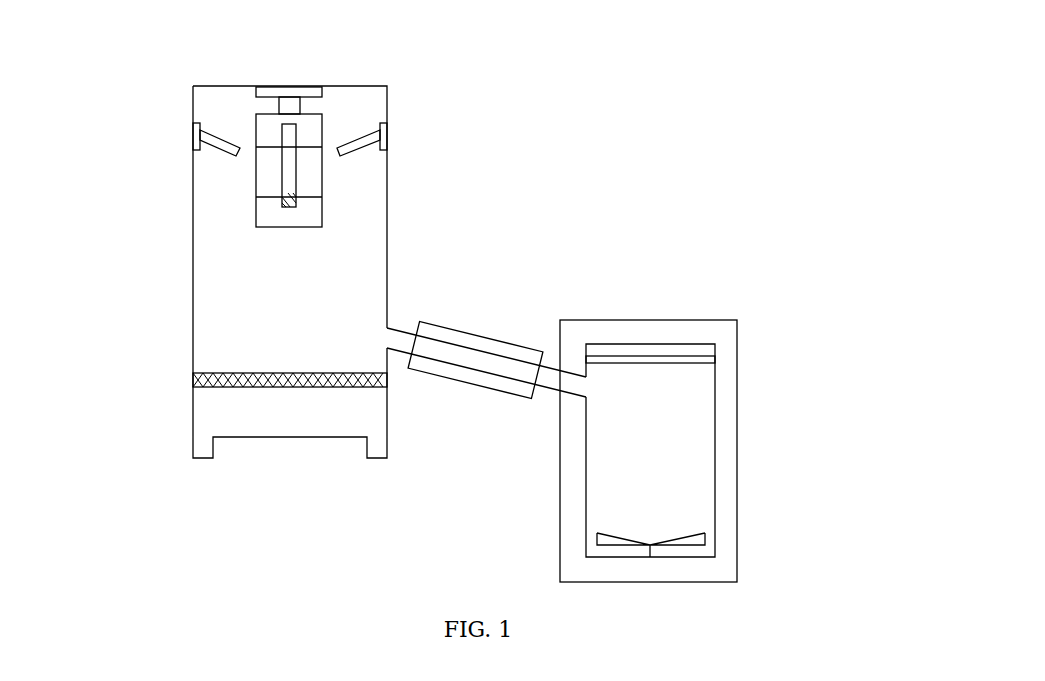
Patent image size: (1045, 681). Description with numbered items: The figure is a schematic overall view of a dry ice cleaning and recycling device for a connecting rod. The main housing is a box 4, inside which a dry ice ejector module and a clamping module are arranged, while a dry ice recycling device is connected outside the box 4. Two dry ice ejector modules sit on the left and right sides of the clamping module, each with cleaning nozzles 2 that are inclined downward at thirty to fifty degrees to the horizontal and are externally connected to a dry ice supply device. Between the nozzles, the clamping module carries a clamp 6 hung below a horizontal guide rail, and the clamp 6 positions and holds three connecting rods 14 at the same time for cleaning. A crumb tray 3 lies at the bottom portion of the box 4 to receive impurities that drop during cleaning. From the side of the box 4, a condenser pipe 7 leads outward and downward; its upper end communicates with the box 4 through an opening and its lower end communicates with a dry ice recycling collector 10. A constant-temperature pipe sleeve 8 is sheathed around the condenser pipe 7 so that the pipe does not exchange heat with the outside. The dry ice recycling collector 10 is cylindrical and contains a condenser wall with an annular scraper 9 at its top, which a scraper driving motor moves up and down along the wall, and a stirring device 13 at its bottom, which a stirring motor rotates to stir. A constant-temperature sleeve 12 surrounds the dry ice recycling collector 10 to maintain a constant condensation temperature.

The cleaning nozzle 2 is at (200, 142).
The crumb tray 3 is at (228, 375).
The box 4 is at (192, 412).
The clamp 6 is at (323, 125).
The condenser pipe 7 is at (402, 333).
The constant-temperature pipe sleeve 8 is at (490, 335).
The annular scraper 9 is at (645, 353).
The dry ice recycling collector 10 is at (715, 395).
The constant-temperature sleeve 12 is at (737, 433).
The stirring device 13 is at (700, 537).
The connecting rod 14 is at (295, 175).